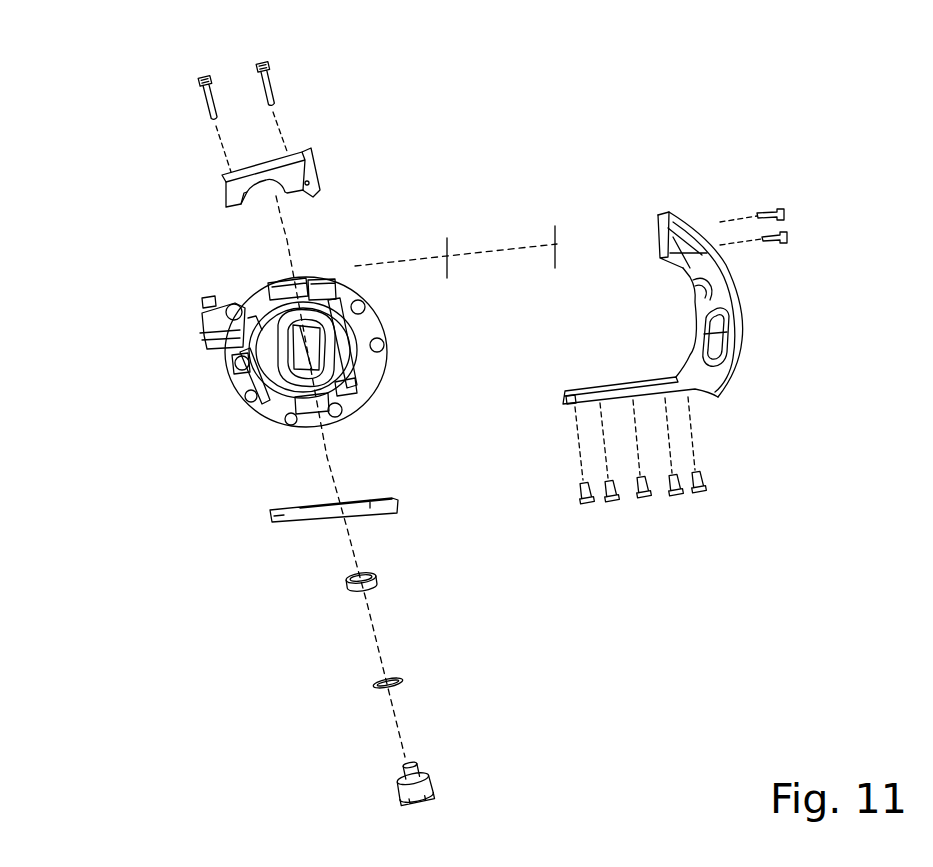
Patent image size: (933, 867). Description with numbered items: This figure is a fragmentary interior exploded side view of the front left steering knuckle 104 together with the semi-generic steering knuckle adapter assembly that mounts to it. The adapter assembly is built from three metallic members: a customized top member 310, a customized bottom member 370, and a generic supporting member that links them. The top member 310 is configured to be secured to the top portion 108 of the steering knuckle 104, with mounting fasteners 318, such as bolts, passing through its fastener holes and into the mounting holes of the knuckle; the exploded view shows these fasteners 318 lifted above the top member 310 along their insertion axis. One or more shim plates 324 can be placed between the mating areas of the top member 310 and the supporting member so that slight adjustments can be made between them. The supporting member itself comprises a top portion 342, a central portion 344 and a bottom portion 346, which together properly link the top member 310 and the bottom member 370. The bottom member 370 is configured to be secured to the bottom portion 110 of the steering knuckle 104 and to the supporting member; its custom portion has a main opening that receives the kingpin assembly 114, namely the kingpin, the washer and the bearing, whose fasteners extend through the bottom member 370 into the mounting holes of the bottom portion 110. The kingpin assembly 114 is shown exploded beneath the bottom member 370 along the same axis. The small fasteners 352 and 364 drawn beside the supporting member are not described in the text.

The steering knuckle 104 is at (377, 333).
The top portion of the steering knuckle 108 is at (234, 304).
The bottom portion of the steering knuckle 110 is at (262, 410).
The kingpin assembly 114 is at (393, 561).
The top member 310 is at (222, 183).
The mounting fasteners 318 is at (272, 54).
The shim plates 324 is at (552, 229).
The top portion of the supporting member 342 is at (691, 231).
The central portion of the supporting member 344 is at (730, 298).
The bottom portion of the supporting member 346 is at (699, 389).
The screws 352 is at (783, 200).
The screws 364 is at (720, 493).
The bottom member 370 is at (270, 520).